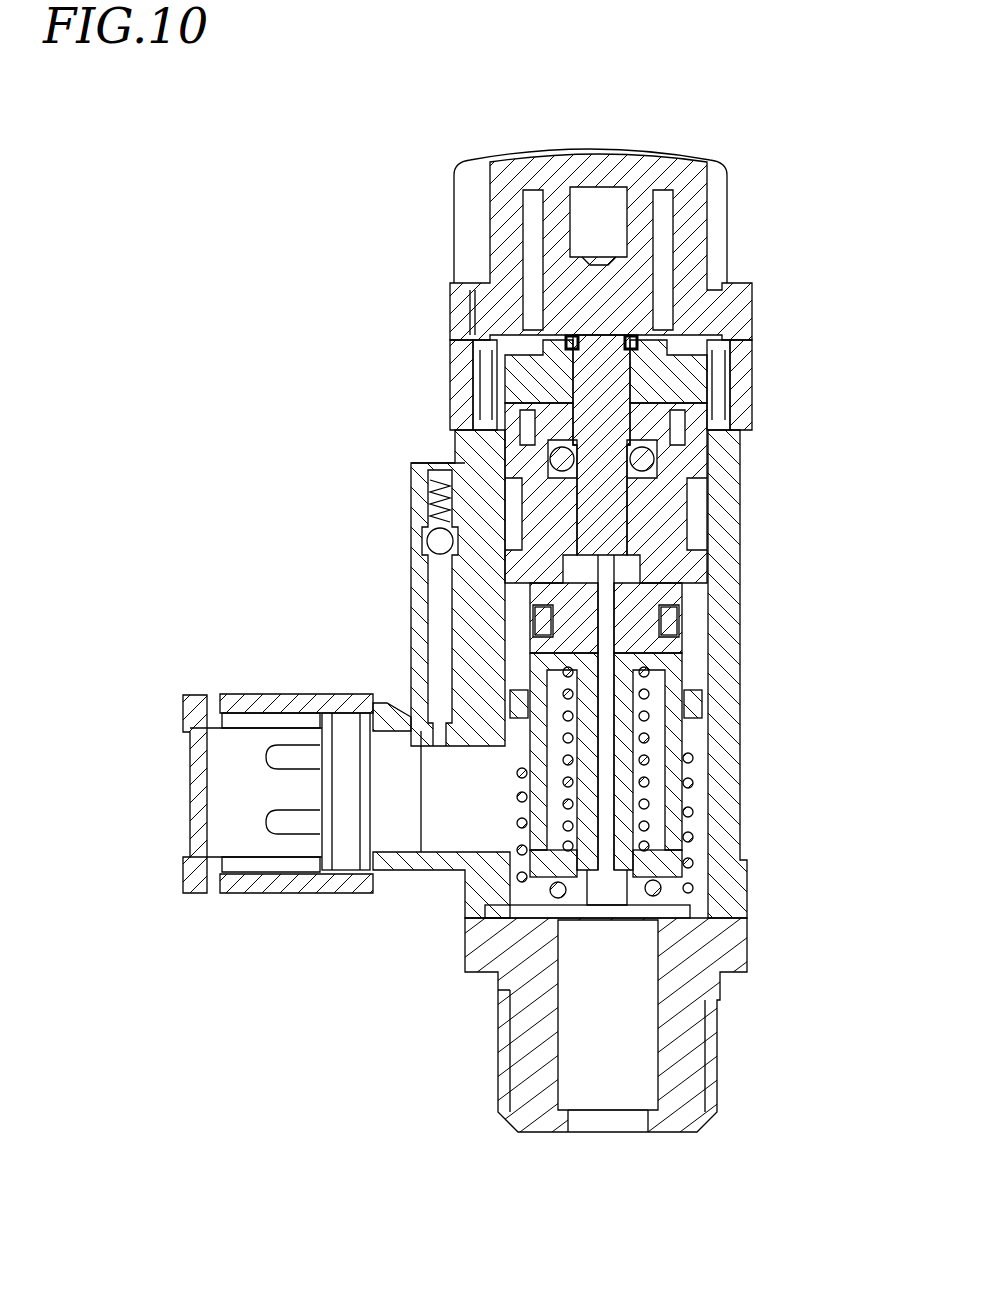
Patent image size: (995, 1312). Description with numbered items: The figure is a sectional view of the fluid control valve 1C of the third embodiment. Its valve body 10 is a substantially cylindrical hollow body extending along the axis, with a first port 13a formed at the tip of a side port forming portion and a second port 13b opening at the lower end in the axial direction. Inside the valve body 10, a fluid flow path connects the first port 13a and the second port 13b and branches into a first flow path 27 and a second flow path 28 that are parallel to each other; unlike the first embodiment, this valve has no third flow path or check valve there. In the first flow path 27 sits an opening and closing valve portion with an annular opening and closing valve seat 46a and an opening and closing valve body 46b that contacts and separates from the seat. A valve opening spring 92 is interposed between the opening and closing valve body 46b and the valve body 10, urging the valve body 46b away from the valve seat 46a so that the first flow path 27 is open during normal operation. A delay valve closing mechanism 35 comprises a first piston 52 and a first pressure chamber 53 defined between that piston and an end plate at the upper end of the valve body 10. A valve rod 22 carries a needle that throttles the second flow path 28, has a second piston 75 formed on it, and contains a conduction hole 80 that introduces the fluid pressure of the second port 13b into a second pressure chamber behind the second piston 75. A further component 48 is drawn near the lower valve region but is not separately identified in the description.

The fluid control valve 1C is at (286, 157).
The valve body 10 is at (750, 572).
The first port 13a is at (213, 807).
The second port 13b is at (607, 1120).
The valve rod 22 is at (608, 510).
The first flow path 27 is at (507, 888).
The second flow path 28 is at (606, 886).
The delay valve closing mechanism 35 is at (390, 465).
The opening and closing valve seat 46a is at (640, 915).
The opening and closing valve body 46b is at (662, 888).
The valve seat 48 is at (500, 937).
The first piston 52 is at (713, 447).
The first pressure chamber 53 is at (748, 375).
The second piston 75 is at (623, 623).
The conduction hole 80 is at (602, 694).
The valve opening spring 92 is at (643, 808).